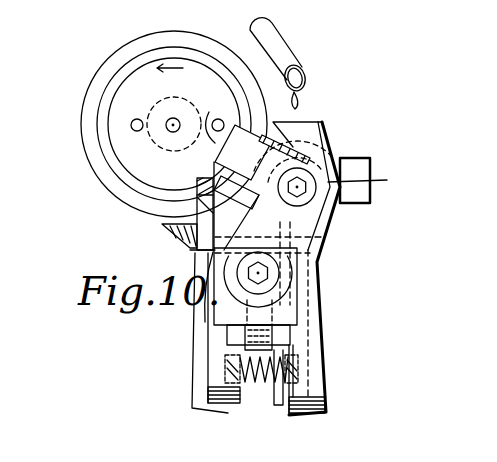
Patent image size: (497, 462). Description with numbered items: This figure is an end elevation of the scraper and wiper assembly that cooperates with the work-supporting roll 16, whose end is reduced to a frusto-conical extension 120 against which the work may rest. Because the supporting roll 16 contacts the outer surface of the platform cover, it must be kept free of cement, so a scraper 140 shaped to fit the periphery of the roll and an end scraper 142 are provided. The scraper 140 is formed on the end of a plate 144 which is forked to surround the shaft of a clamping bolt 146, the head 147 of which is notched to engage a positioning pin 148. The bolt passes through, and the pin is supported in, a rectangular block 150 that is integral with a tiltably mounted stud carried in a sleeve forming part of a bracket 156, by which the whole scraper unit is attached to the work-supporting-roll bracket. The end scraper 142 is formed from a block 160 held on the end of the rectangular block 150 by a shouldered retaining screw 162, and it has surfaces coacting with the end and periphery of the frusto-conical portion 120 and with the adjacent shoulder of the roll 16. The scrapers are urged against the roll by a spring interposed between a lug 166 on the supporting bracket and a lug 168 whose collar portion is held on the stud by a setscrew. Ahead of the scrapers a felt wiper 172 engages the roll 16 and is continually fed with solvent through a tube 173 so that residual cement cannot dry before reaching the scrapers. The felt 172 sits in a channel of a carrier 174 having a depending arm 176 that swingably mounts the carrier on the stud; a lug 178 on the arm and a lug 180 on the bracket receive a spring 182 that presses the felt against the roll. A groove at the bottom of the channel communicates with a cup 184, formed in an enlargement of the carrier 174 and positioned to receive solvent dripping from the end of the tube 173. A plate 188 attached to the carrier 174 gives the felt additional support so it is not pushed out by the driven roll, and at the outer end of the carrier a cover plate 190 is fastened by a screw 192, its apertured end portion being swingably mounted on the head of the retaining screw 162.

The supporting roll 16 is at (82, 99).
The frusto-conical extension 120 is at (107, 145).
The felt wiper 172 is at (218, 118).
The tube 173 is at (287, 42).
The scraper 140 is at (185, 238).
The end scraper 142 is at (213, 180).
The plate 144 is at (320, 250).
The clamping bolt 146 is at (313, 343).
The head 147 is at (320, 237).
The positioning pin 148 is at (317, 258).
The rectangular block 150 is at (318, 318).
The bracket 156 is at (363, 192).
The block 160 is at (318, 295).
The shouldered retaining screw 162 is at (237, 273).
The lug 166 is at (280, 405).
The lug 168 is at (182, 382).
The carrier 174 is at (336, 179).
The depending arm 176 is at (318, 308).
The lug 178 is at (317, 392).
The lug 180 is at (213, 341).
The spring 182 is at (268, 362).
The cup 184 is at (314, 116).
The plate 188 is at (306, 137).
The cover plate 190 is at (297, 216).
The screw 192 is at (310, 180).